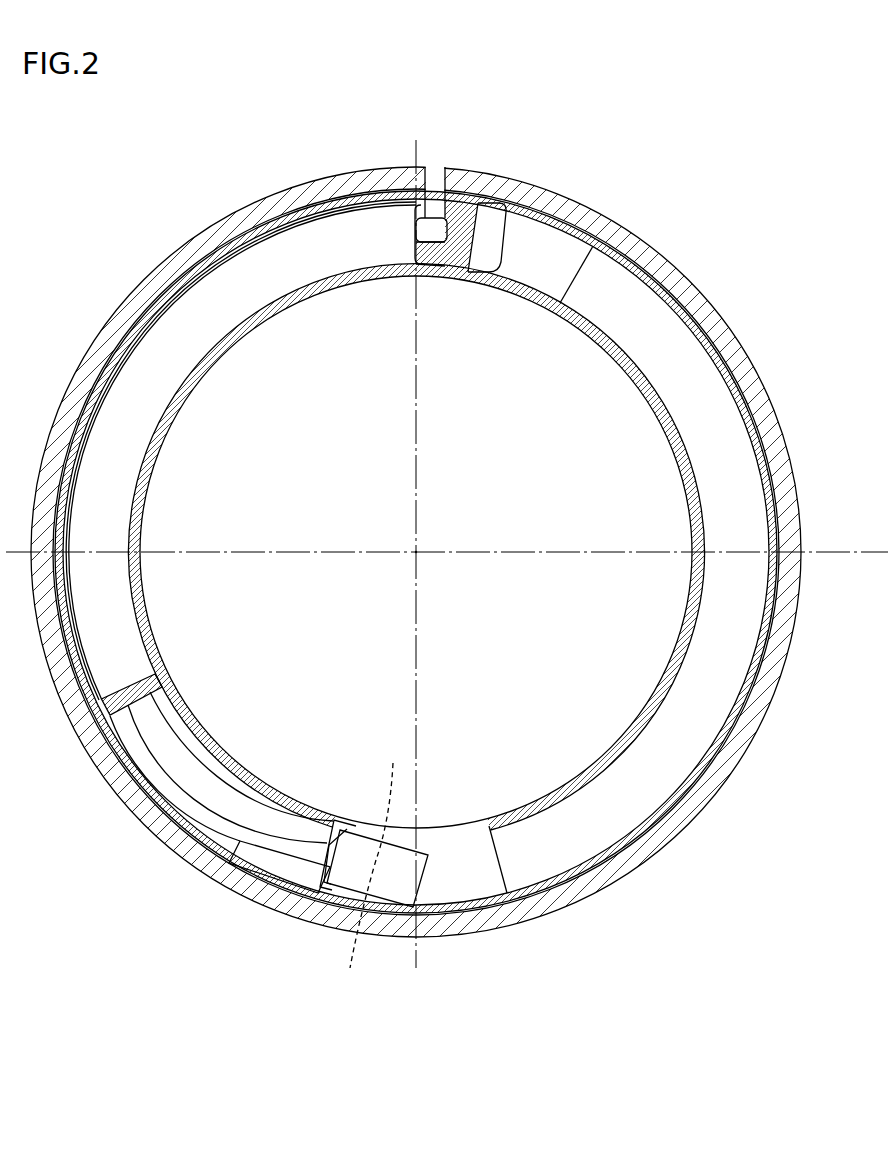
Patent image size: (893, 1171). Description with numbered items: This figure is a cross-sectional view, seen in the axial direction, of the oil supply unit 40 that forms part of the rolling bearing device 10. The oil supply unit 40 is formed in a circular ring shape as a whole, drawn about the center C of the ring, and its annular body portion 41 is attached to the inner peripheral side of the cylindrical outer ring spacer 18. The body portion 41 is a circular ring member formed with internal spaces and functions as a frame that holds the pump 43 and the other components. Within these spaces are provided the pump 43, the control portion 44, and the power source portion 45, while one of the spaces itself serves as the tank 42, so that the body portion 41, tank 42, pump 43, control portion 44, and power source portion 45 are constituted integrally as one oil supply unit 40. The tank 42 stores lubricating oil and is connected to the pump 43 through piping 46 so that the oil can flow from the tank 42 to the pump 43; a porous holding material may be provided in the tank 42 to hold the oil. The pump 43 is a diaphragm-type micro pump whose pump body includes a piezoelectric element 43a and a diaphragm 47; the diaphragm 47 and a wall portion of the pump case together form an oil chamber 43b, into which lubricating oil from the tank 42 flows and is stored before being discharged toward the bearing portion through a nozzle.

The rolling bearing device 10 is at (671, 850).
The outer ring spacer 18 is at (312, 188).
The oil supply unit 40 is at (237, 228).
The body portion 41 is at (170, 838).
The tank 42 is at (143, 314).
The pump 43 is at (358, 830).
The piezoelectric element 43a is at (351, 932).
The oil chamber 43b is at (391, 797).
The control portion 44 is at (700, 362).
The power source portion 45 is at (728, 523).
The piping 46 is at (232, 863).
The diaphragm 47 is at (147, 703).
The center axis C is at (418, 551).